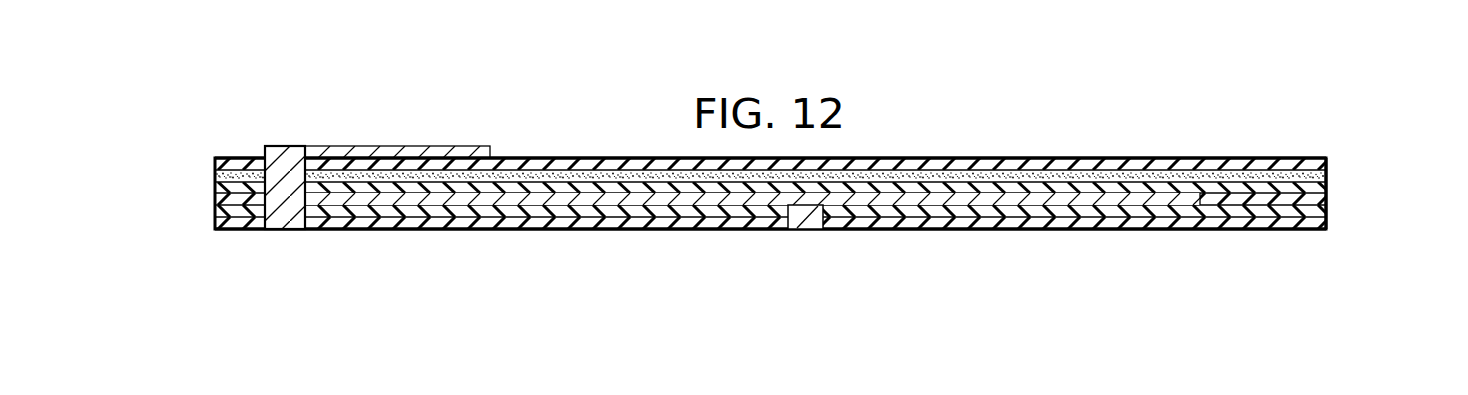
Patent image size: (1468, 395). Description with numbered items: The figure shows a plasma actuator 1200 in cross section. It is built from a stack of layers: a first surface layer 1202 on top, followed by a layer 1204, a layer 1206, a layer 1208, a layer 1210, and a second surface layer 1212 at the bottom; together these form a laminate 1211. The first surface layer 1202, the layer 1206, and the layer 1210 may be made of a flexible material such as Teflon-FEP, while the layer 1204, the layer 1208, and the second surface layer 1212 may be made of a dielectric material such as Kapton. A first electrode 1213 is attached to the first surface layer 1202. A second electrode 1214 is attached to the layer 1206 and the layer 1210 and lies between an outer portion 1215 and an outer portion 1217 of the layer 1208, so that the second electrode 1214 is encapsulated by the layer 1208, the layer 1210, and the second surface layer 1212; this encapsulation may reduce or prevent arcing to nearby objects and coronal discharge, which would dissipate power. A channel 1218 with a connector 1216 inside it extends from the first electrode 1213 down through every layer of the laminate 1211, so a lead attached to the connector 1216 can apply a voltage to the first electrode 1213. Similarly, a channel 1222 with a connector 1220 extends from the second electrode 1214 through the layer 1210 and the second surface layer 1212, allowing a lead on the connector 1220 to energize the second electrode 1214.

The plasma actuator 1200 is at (1065, 124).
The first surface layer 1202 is at (232, 161).
The layer 1204 is at (215, 165).
The layer 1206 is at (215, 180).
The layer 1208 is at (215, 195).
The layer 1210 is at (215, 223).
The laminate 1211 is at (568, 158).
The second surface layer 1212 is at (218, 229).
The first electrode 1213 is at (367, 152).
The second electrode 1214 is at (1153, 198).
The outer portion 1215 is at (409, 198).
The connector 1216 is at (290, 222).
The outer portion 1217 is at (1322, 198).
The channel 1218 is at (299, 232).
The connector 1220 is at (812, 222).
The channel 1222 is at (821, 232).